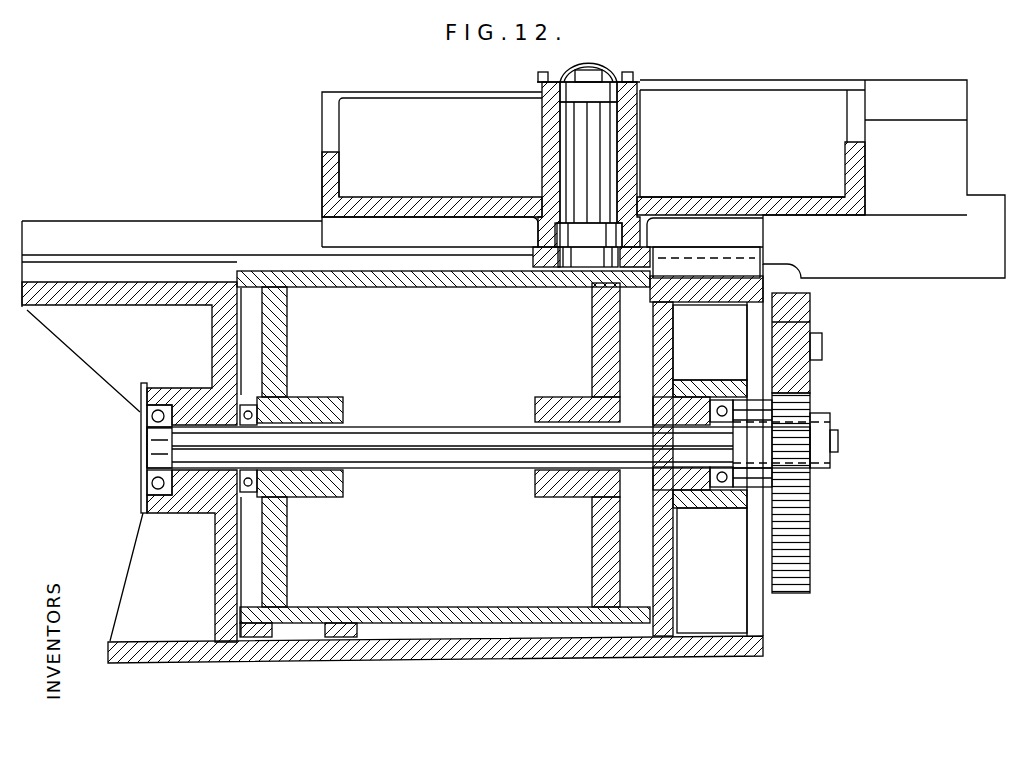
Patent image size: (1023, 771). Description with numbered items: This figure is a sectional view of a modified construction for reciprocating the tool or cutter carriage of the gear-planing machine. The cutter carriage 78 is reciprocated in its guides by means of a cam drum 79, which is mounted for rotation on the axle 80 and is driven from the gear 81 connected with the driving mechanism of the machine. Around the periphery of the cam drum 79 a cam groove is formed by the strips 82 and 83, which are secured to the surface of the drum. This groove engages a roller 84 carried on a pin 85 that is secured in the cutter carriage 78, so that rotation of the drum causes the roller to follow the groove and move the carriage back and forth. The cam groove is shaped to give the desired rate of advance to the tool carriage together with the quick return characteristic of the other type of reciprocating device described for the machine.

The cutter carriage 78 is at (445, 101).
The cam drum 79 is at (457, 284).
The axle 80 is at (467, 427).
The gear 81 is at (810, 533).
The strip 82 is at (656, 248).
The strip 83 is at (538, 257).
The roller 84 is at (575, 259).
The pin 85 is at (587, 145).